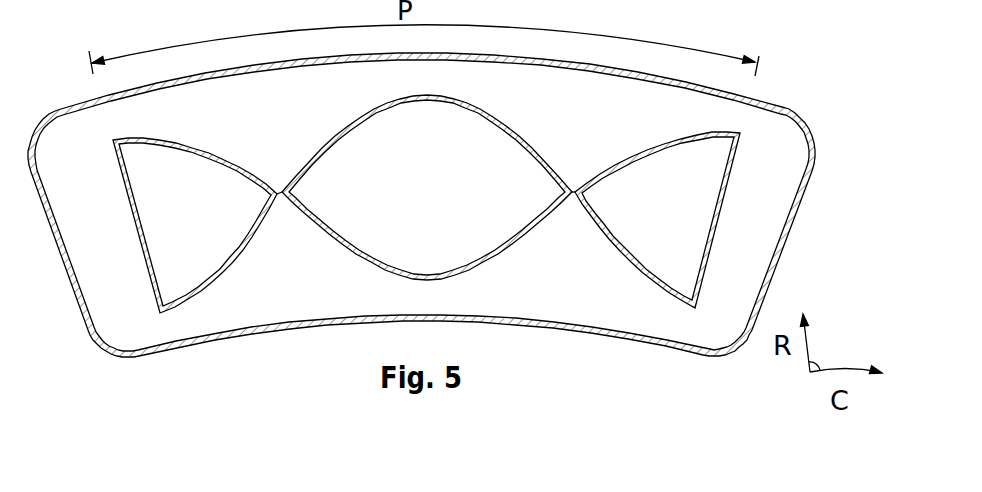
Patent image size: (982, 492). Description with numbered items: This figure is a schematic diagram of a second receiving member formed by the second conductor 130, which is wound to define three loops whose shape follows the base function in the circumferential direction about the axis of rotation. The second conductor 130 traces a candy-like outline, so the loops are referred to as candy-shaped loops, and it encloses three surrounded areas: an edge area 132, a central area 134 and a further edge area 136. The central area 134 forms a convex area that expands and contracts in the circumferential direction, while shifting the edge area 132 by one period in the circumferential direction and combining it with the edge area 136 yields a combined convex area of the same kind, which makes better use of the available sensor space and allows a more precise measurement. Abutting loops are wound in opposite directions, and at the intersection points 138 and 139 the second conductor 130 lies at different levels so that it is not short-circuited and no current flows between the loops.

The second conductor 130 is at (717, 220).
The edge area 132 is at (215, 230).
The central area 134 is at (451, 193).
The edge area 136 is at (683, 217).
The intersection point 138 is at (280, 218).
The intersection point 139 is at (572, 210).